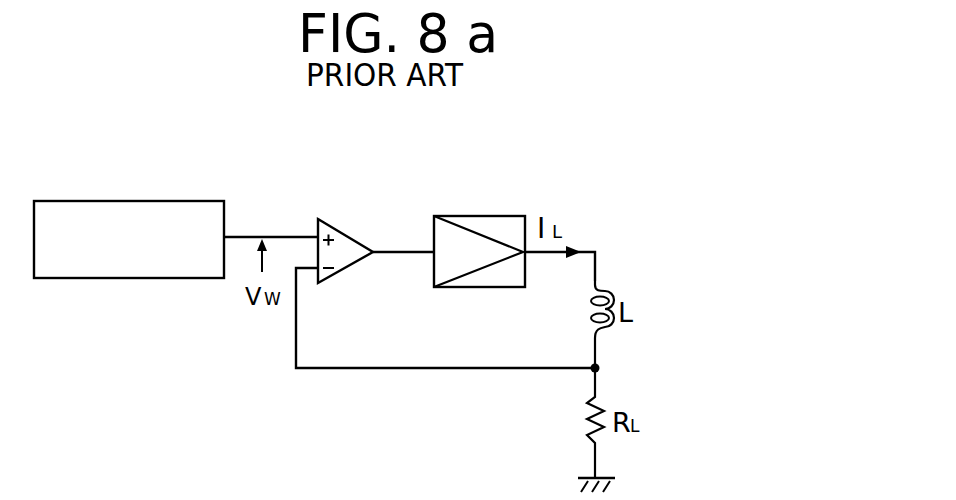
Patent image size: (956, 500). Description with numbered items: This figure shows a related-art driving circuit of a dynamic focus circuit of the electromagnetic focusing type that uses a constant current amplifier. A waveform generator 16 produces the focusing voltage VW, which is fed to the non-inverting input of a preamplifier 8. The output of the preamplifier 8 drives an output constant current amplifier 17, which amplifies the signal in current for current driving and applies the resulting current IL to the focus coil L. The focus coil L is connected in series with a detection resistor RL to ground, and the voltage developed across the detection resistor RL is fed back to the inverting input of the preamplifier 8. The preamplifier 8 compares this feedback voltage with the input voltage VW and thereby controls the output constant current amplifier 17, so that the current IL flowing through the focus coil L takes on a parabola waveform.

The waveform generator 16 is at (223, 201).
The preamplifier 8 is at (320, 219).
The output constant current amplifier 17 is at (497, 216).